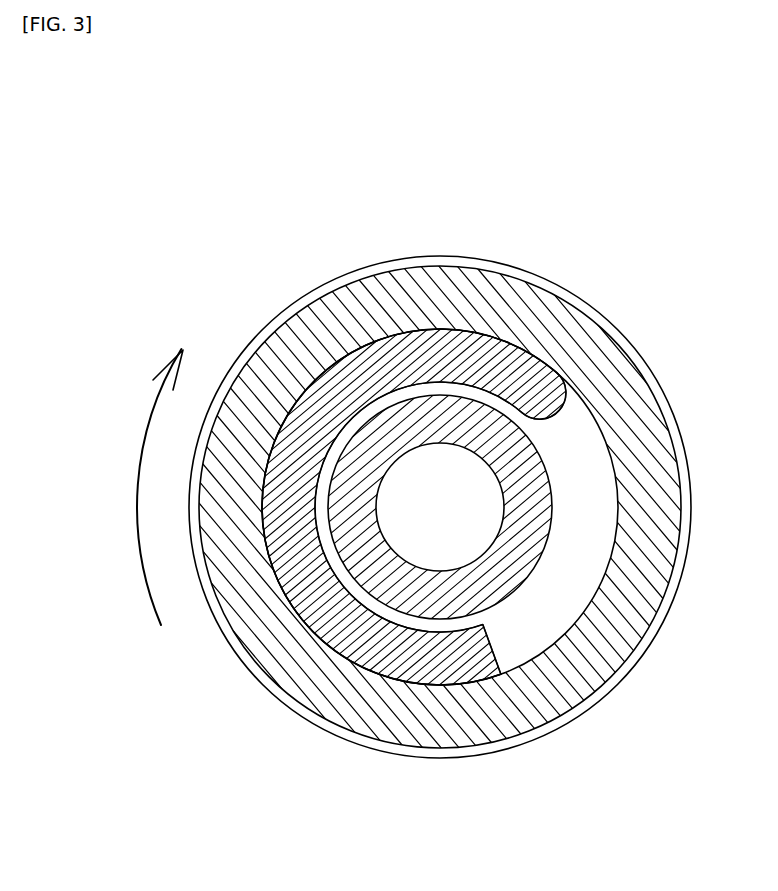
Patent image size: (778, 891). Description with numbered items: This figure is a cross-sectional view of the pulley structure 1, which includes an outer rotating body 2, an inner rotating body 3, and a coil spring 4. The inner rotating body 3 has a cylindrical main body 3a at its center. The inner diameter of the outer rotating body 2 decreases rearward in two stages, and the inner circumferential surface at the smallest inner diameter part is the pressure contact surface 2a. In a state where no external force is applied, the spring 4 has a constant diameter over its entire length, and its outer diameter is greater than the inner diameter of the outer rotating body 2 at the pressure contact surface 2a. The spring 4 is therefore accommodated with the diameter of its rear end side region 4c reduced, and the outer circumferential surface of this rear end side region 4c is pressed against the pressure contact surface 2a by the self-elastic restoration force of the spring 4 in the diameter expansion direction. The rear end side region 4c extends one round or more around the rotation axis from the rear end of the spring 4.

The pulley structure 1 is at (614, 186).
The outer rotating body 2 is at (432, 283).
The pressure contact surface 2a is at (390, 340).
The inner rotating body 3 is at (440, 507).
The cylindrical main body 3a is at (383, 467).
The coil spring 4 is at (267, 372).
The rear end side region 4c is at (340, 390).